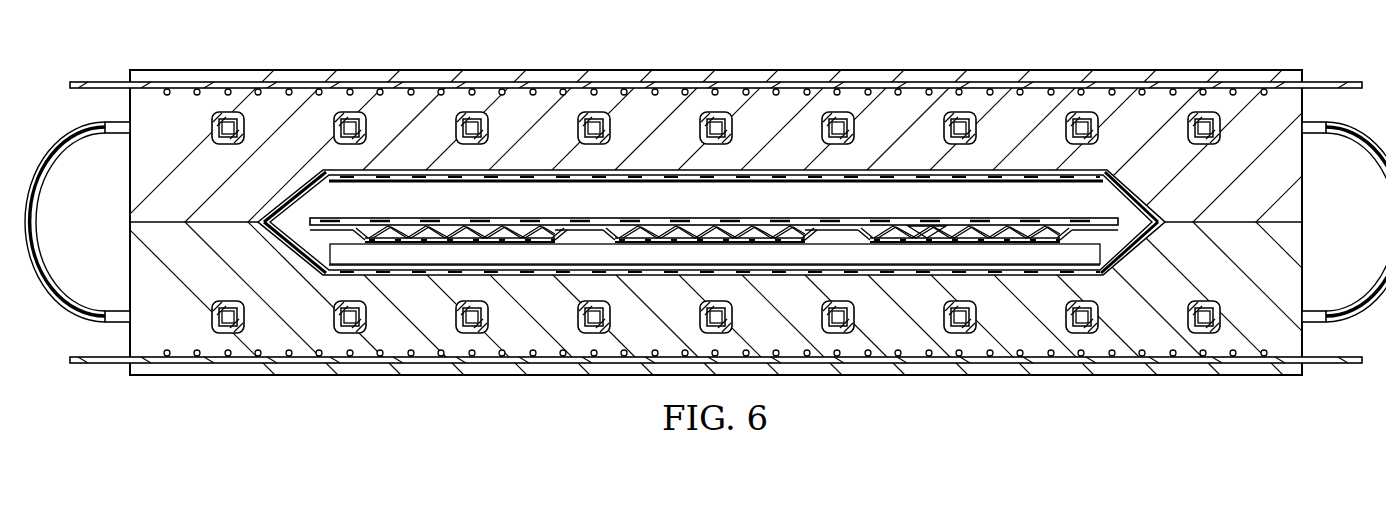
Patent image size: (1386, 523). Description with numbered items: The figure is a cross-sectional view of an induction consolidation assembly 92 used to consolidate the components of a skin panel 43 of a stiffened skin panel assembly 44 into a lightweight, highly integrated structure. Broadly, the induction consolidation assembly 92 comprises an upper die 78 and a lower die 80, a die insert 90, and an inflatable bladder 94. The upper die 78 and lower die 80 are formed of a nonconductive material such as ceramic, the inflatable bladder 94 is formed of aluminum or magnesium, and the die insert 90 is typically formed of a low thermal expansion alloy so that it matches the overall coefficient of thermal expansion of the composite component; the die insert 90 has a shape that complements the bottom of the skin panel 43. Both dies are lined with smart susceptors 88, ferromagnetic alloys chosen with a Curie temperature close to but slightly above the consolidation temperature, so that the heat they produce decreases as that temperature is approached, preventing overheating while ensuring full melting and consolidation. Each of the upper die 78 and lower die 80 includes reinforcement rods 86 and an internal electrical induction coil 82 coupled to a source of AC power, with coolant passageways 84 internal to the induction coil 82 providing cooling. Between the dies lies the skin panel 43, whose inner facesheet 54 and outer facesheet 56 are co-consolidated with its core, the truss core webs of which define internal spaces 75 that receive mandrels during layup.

The induction consolidation assembly 92 is at (825, 58).
The upper die 78 is at (303, 110).
The lower die 80 is at (283, 345).
The reinforcement rods 86 is at (436, 82).
The internal electrical induction coil 82 is at (212, 128).
The coolant passageways 84 is at (606, 128).
The smart susceptors 88 is at (428, 178).
The inflatable bladder 94 is at (548, 198).
The outer facesheet 56 is at (500, 218).
The internal spaces 75 is at (918, 232).
The skin panel 43 is at (1003, 232).
The stiffened skin panel assembly 44 is at (396, 242).
The inner facesheet 54 is at (797, 243).
The die insert 90 is at (913, 262).